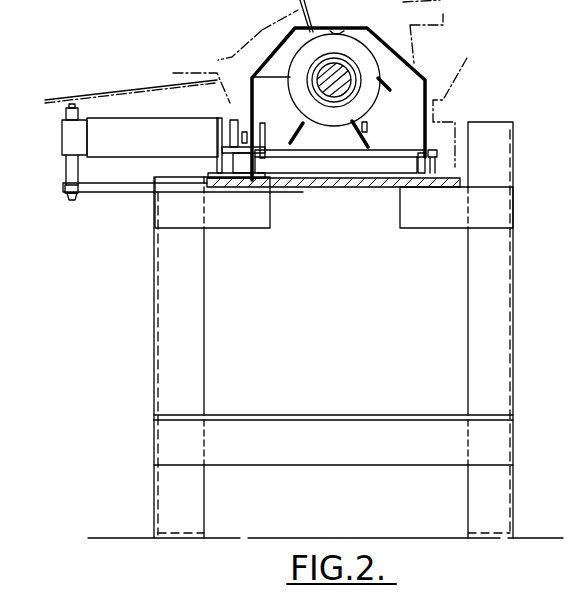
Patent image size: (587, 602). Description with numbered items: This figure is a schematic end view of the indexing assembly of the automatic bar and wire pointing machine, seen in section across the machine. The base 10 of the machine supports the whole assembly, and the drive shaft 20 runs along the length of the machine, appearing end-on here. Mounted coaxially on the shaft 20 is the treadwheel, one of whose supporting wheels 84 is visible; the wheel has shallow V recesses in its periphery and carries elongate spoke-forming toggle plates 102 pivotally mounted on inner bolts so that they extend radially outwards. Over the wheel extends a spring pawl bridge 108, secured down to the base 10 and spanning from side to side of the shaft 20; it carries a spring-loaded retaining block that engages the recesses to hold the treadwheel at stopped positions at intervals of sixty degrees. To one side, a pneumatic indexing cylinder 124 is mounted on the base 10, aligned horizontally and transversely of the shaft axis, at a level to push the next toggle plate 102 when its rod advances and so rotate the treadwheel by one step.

The base 10 is at (170, 353).
The drive shaft 20 is at (342, 70).
The supporting wheel 84 is at (360, 100).
The toggle plate 102 is at (228, 122).
The spring pawl bridge 108 is at (265, 63).
The pneumatic indexing cylinder 124 is at (125, 140).